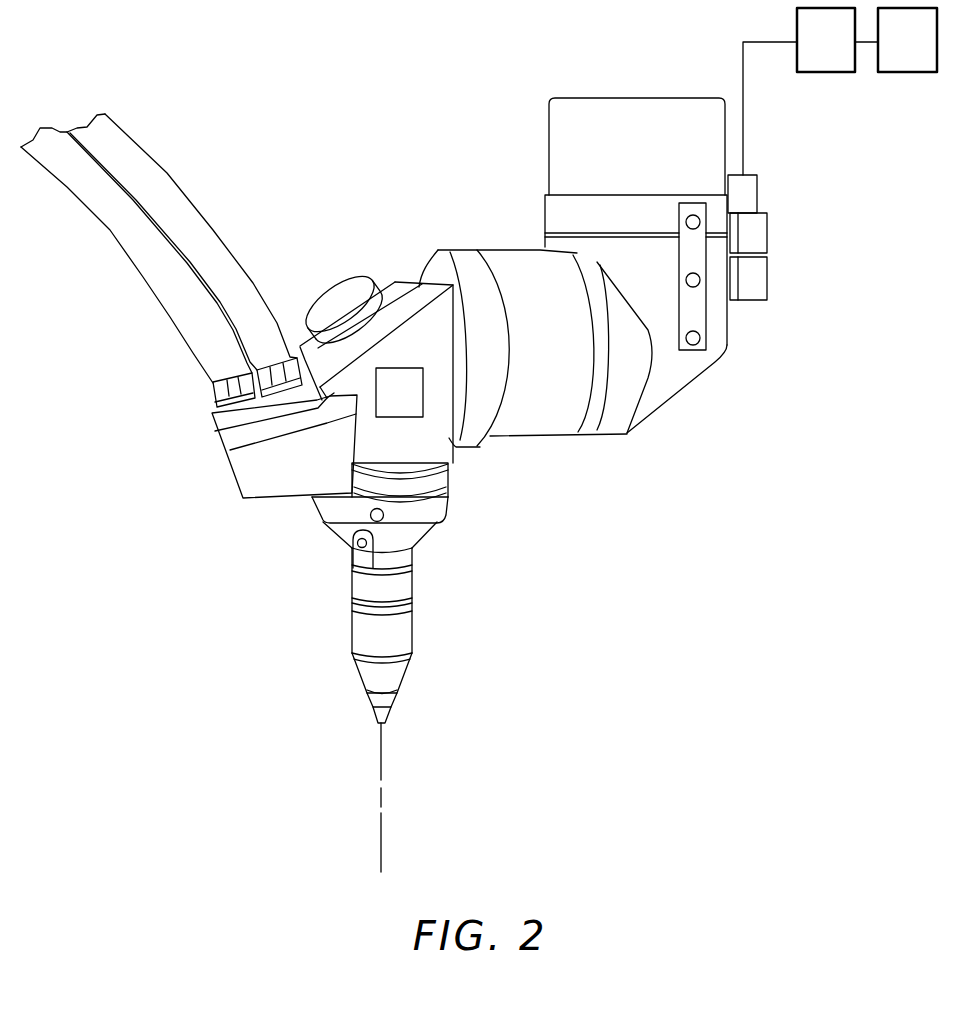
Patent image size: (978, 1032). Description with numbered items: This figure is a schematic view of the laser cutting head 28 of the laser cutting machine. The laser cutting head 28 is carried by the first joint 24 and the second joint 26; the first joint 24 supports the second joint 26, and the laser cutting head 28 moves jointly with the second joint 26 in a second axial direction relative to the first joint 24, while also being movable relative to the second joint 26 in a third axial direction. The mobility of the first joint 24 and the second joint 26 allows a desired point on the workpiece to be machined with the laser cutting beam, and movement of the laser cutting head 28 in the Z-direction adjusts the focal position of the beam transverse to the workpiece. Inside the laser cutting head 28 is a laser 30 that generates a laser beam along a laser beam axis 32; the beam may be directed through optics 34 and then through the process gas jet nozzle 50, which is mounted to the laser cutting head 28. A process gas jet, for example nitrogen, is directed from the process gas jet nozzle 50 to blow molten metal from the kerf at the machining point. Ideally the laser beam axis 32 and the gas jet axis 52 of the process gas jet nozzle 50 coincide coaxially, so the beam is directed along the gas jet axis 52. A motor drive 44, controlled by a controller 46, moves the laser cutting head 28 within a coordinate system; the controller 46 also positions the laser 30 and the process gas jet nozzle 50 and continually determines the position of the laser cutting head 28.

The first joint 24 is at (307, 292).
The second joint 26 is at (540, 204).
The laser cutting head 28 is at (258, 543).
The laser 30 is at (396, 282).
The laser beam axis 32 is at (382, 860).
The optics 34 is at (410, 405).
The motor drive 44 is at (810, 53).
The controller 46 is at (891, 53).
The process gas jet nozzle 50 is at (395, 675).
The gas jet axis 52 is at (380, 832).